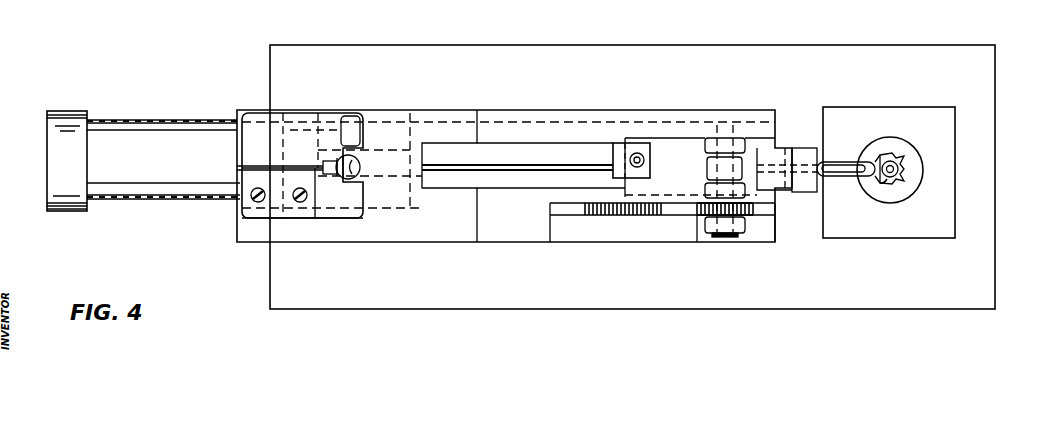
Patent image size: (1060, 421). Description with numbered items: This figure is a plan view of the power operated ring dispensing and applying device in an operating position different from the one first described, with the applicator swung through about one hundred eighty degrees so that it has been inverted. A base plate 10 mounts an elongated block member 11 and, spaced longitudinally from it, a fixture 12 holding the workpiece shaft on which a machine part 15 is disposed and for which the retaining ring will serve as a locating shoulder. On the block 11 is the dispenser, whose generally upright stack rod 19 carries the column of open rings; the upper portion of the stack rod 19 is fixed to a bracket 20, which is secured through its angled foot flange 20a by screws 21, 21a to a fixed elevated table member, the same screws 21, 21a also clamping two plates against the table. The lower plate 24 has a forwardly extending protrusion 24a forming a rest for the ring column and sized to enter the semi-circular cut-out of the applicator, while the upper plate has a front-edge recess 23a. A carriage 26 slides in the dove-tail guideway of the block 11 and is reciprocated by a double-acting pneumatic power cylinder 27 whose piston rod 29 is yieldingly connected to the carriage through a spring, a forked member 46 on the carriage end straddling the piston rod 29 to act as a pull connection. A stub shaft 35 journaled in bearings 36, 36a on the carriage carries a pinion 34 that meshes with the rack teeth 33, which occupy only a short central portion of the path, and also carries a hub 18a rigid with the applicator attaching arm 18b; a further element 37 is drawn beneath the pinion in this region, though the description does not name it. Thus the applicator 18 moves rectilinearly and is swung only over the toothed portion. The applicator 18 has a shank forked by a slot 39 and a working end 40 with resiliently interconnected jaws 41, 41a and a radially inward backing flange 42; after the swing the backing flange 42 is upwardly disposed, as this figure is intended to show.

The base plate 10 is at (422, 292).
The block member 11 is at (550, 116).
The fixture 12 is at (943, 213).
The machine part 15 is at (908, 182).
The applicator 18 is at (848, 156).
The hub 18a is at (710, 167).
The applicator attaching arm 18b is at (783, 155).
The stack rod 19 is at (329, 158).
The bracket 20 is at (258, 165).
The angled foot flange 20a is at (260, 218).
The screw 21 is at (257, 198).
The screw 21a is at (303, 199).
The recess 23a is at (346, 128).
The lower plate 24 is at (262, 142).
The protrusion 24a is at (356, 160).
The carriage 26 is at (667, 150).
The pneumatic power cylinder 27 is at (158, 203).
The piston rod 29 is at (534, 165).
The rack teeth 33 is at (622, 216).
The pinion 34 is at (757, 208).
The stub shaft 35 is at (723, 133).
The bearing 36 is at (740, 137).
The bearing 36a is at (703, 191).
The gear 37 is at (703, 230).
The slot 39 is at (835, 163).
The working end 40 is at (886, 180).
The jaw 41 is at (883, 155).
The jaw 41a is at (882, 178).
The backing flange 42 is at (893, 162).
The forked member 46 is at (617, 145).